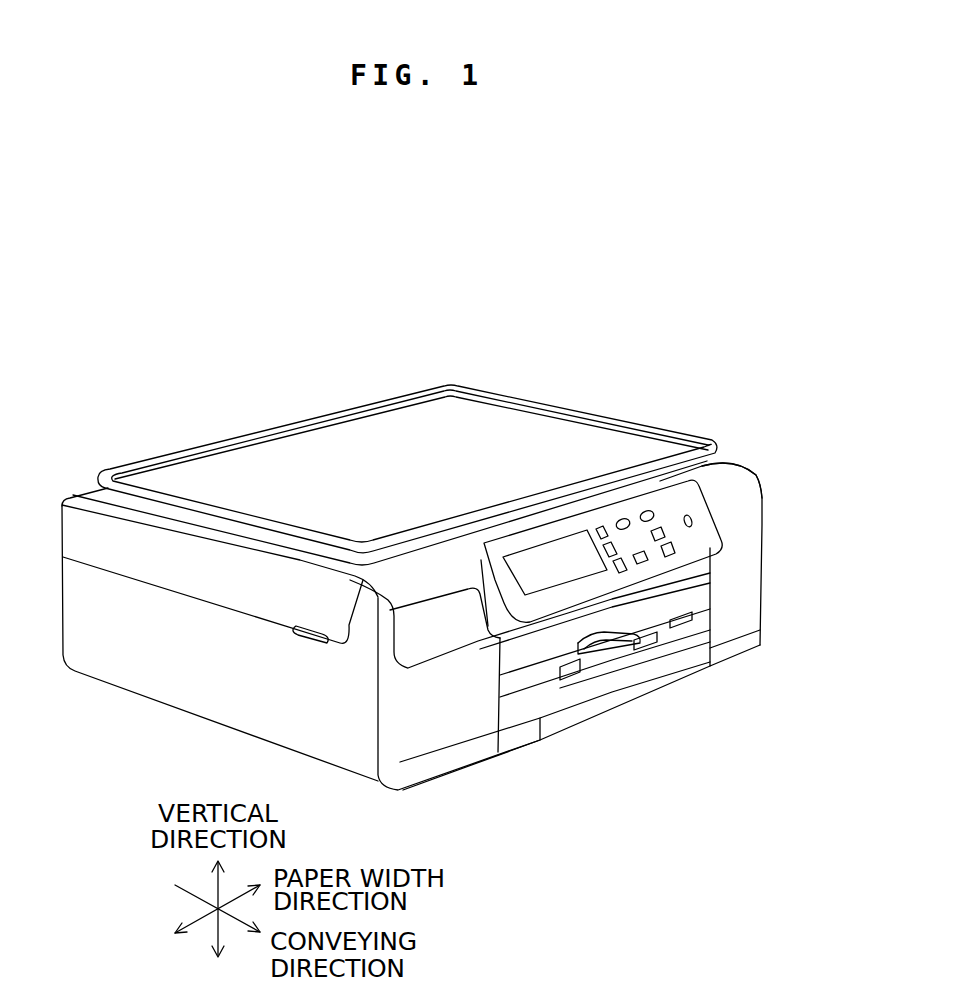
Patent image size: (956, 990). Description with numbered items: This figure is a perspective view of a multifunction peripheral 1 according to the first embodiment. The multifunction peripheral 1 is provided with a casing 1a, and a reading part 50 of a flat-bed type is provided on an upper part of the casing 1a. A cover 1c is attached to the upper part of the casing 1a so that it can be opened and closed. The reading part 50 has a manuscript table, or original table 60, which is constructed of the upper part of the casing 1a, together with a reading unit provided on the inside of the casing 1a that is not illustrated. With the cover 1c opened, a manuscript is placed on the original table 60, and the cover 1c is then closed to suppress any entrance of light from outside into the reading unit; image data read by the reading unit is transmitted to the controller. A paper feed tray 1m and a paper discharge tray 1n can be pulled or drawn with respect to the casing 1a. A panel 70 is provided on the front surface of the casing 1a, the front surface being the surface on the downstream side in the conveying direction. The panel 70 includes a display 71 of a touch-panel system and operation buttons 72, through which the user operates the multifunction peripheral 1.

The multifunction peripheral 1 is at (552, 246).
The casing 1a is at (752, 579).
The cover 1c is at (142, 468).
The paper feed tray 1m is at (613, 673).
The paper discharge tray 1n is at (652, 646).
The reading part 50 is at (570, 388).
The manuscript table 60 is at (718, 458).
The panel 70 is at (703, 533).
The display 71 is at (550, 540).
The operation buttons 72 is at (621, 517).